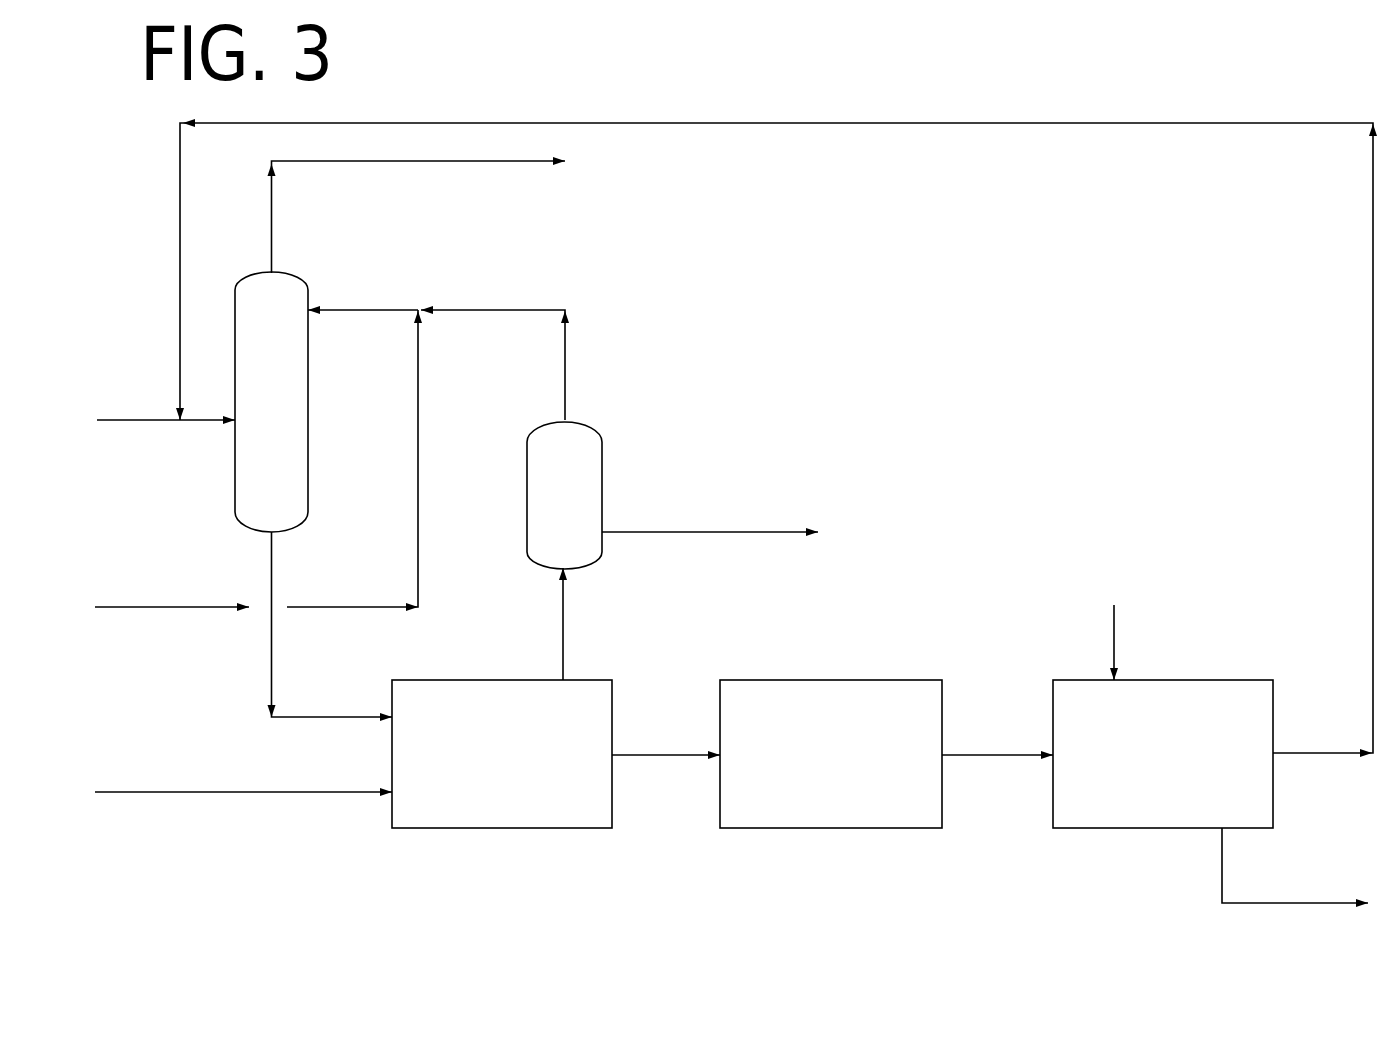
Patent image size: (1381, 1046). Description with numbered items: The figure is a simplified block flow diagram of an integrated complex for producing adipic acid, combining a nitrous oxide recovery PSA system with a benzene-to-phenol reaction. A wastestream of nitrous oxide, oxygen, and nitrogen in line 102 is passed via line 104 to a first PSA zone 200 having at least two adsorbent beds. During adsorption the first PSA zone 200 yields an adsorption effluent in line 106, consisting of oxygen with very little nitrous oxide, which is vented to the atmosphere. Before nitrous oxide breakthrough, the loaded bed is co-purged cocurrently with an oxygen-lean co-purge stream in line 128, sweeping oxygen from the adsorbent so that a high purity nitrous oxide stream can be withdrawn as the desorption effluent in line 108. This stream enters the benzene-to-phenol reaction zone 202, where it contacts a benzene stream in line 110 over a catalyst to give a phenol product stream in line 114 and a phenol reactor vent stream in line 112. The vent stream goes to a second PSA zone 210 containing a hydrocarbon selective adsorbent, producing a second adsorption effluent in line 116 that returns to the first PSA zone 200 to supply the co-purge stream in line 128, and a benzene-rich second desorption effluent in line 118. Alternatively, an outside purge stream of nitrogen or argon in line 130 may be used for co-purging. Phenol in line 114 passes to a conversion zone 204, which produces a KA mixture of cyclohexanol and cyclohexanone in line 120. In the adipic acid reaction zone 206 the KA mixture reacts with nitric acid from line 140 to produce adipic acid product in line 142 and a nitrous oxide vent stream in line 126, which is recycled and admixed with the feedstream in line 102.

The wastestream line 102 is at (167, 420).
The feed line 104 is at (224, 423).
The adsorption effluent line 106 is at (360, 161).
The desorption effluent line 108 is at (355, 717).
The aromatic hydrocarbon stream line 110 is at (222, 792).
The phenol reactor vent stream line 112 is at (563, 630).
The phenol product stream line 114 is at (636, 757).
The second adsorption effluent stream line 116 is at (487, 310).
The second desorption effluent line 118 is at (705, 532).
The KA mixture line 120 is at (966, 758).
The nitrous oxide vent stream line 126 is at (178, 272).
The co-purge stream line 128 is at (353, 310).
The outside purge stream line 130 is at (200, 607).
The nitric acid stream line 140 is at (1118, 626).
The adipic acid product line 142 is at (1270, 903).
The first PSA zone 200 is at (308, 393).
The benzene-to-phenol reaction zone 202 is at (526, 770).
The conversion zone 204 is at (856, 770).
The adipic acid reaction zone 206 is at (1187, 770).
The second PSA zone 210 is at (602, 457).